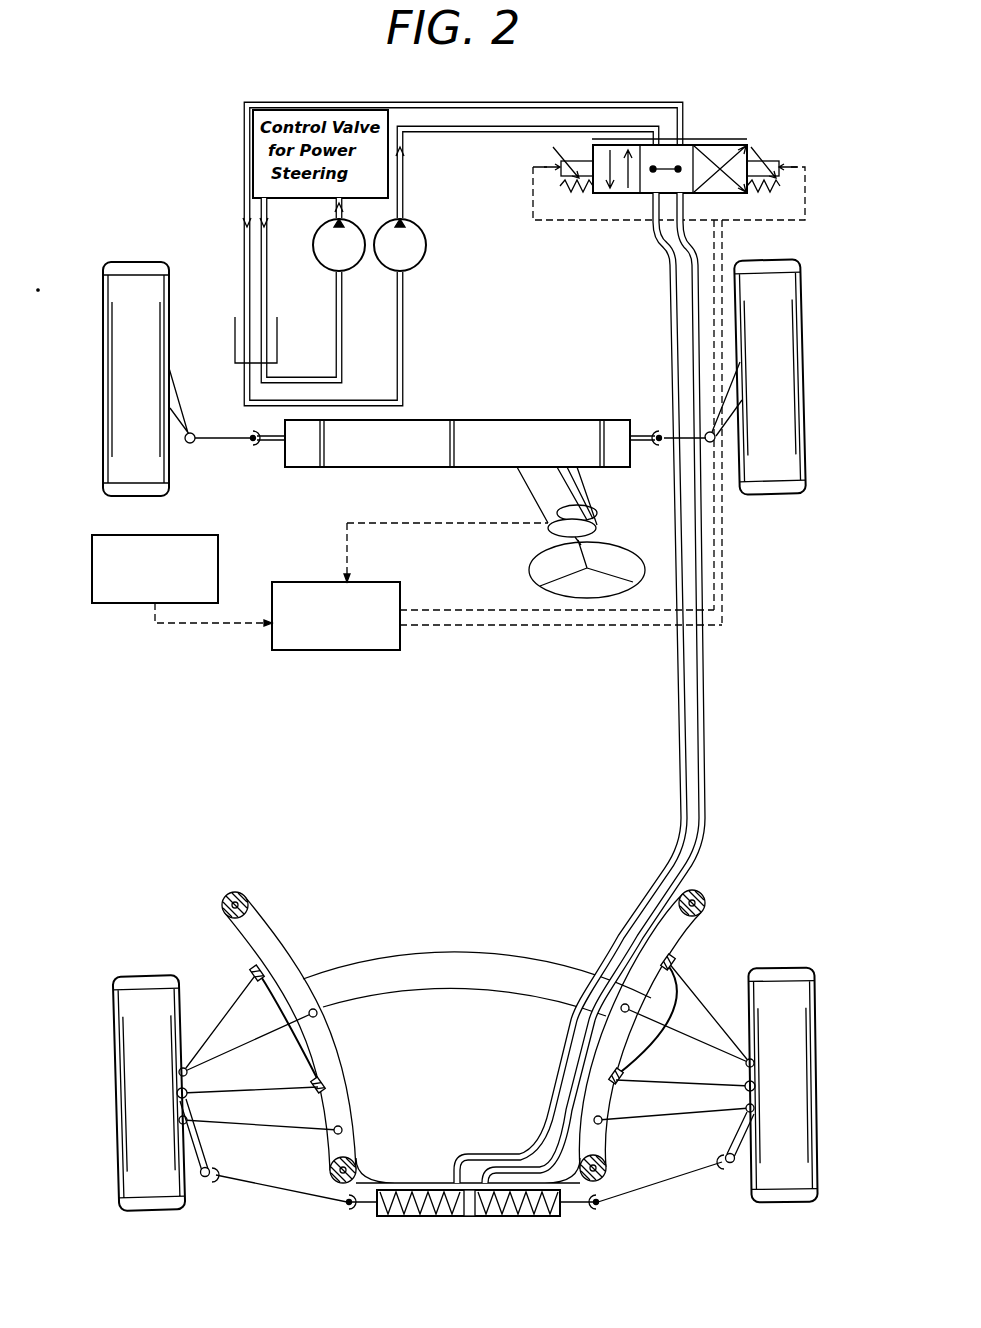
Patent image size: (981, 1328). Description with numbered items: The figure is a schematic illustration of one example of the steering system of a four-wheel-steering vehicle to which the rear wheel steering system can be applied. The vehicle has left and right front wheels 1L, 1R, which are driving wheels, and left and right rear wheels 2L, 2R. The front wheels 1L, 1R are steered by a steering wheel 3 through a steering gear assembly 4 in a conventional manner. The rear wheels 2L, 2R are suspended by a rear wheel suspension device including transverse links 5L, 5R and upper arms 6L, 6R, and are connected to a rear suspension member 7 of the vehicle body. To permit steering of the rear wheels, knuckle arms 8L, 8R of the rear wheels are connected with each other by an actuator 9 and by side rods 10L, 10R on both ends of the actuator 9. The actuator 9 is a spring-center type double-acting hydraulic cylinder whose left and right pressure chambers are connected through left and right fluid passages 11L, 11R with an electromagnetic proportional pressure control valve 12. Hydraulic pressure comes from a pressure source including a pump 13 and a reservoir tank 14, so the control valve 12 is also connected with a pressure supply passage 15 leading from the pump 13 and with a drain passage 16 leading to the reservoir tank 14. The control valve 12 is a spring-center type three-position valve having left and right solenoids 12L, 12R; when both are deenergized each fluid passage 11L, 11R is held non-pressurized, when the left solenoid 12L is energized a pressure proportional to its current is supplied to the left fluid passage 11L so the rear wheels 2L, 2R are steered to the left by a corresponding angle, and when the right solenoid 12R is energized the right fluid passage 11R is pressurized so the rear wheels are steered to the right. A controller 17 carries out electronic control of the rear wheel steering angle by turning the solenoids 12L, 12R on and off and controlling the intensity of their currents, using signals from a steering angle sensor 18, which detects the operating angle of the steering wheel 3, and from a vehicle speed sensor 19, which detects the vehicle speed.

The left front wheel 1L is at (155, 262).
The right front wheel 1R is at (775, 490).
The left rear wheel 2L is at (152, 1211).
The right rear wheel 2R is at (787, 1204).
The steering wheel 3 is at (630, 542).
The steering gear assembly 4 is at (512, 420).
The left transverse link 5L is at (230, 1012).
The right transverse link 5R is at (695, 978).
The left upper arm 6L is at (307, 1125).
The right upper arm 6R is at (622, 1078).
The rear suspension member 7 is at (440, 953).
The left knuckle arm 8L is at (197, 1138).
The right knuckle arm 8R is at (735, 1133).
The actuator 9 is at (444, 1218).
The left side rod 10L is at (280, 1188).
The right side rod 10R is at (667, 1183).
The left fluid passage 11L is at (680, 742).
The right fluid passage 11R is at (706, 742).
The electromagnetic proportional pressure control valve 12 is at (711, 138).
The left solenoid 12L is at (555, 150).
The right solenoid 12R is at (770, 160).
The pump 13 is at (426, 250).
The reservoir tank 14 is at (235, 322).
The pressure supply passage 15 is at (440, 124).
The drain passage 16 is at (422, 103).
The controller 17 is at (315, 582).
The steering angle sensor 18 is at (548, 510).
The vehicle speed sensor 19 is at (215, 535).